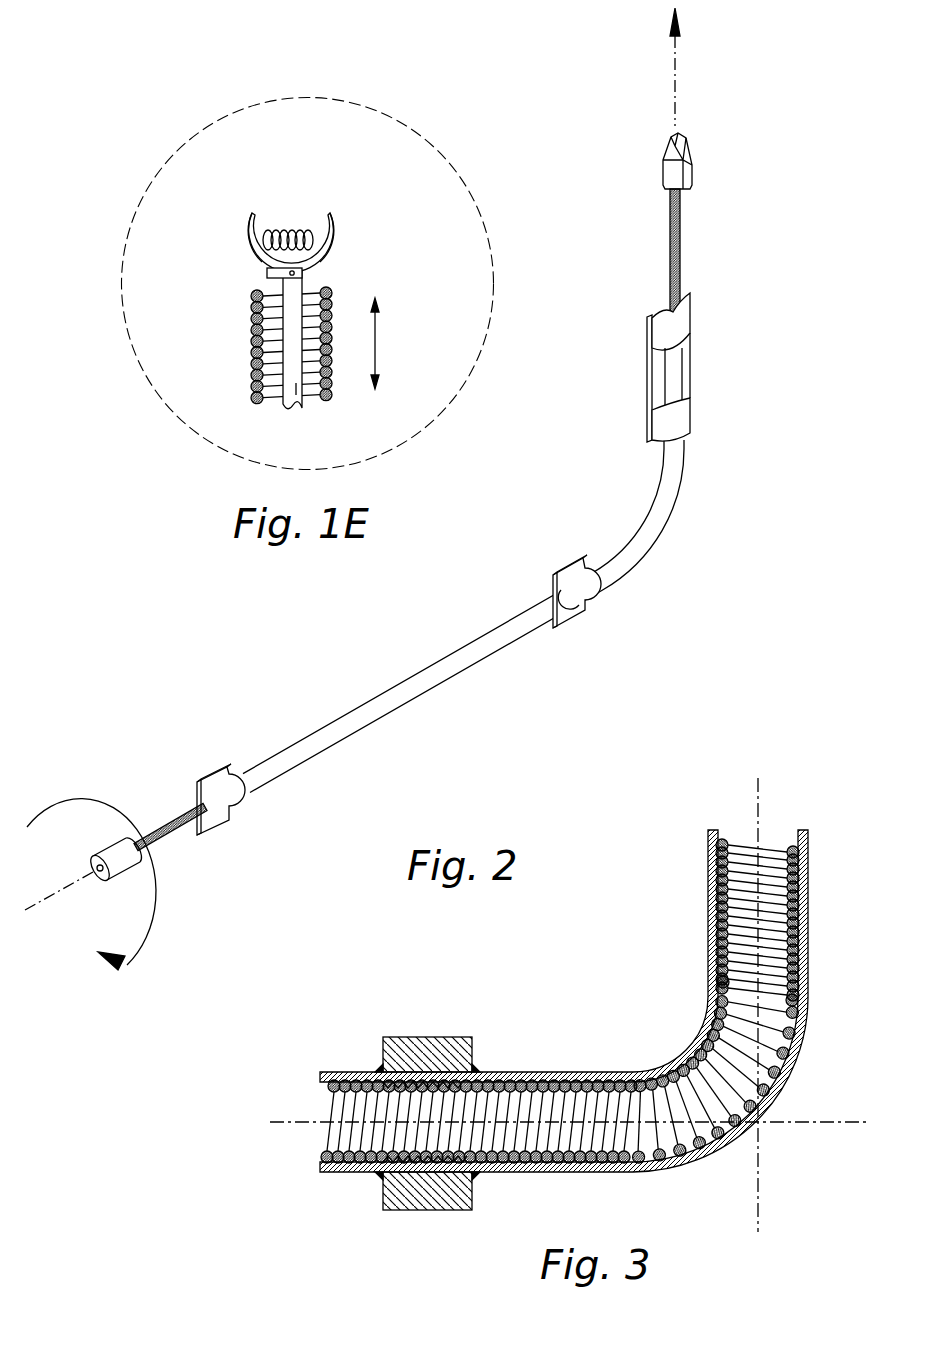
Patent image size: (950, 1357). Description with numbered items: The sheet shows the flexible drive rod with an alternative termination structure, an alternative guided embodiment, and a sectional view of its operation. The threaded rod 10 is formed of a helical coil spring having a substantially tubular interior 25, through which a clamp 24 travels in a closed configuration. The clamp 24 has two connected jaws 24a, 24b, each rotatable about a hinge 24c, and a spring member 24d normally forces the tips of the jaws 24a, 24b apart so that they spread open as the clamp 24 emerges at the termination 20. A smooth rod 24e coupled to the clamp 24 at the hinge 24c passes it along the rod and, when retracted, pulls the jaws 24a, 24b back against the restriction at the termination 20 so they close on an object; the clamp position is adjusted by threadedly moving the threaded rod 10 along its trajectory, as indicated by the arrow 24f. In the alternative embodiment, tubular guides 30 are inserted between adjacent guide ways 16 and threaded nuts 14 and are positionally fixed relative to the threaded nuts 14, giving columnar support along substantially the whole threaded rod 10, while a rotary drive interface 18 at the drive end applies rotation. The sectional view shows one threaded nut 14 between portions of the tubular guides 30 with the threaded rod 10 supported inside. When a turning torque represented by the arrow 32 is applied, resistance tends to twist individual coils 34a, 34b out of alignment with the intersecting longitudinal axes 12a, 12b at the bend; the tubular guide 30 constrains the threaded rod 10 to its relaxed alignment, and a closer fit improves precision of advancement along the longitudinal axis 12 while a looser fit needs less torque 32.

In FIG. 1E, the threaded rod 10 is at (250, 378).
In FIG. 3, the threaded rod 10 is at (332, 1142).
In FIG. 2, the longitudinal axis 12 is at (42, 903).
In FIG. 3, the longitudinal axis 12a is at (838, 1122).
In FIG. 3, the longitudinal axis 12b is at (758, 1172).
In FIG. 2, the threaded nut 14 is at (691, 426).
In FIG. 3, the threaded nut 14 is at (472, 1045).
In FIG. 2, the guide way 16 is at (691, 327).
In FIG. 2, the rotary drive interface 18 is at (120, 882).
In FIG. 2, the termination 20 is at (693, 163).
In FIG. 1E, the clamp 24 is at (274, 209).
In FIG. 1E, the jaw 24a is at (256, 260).
In FIG. 1E, the jaw 24b is at (331, 255).
In FIG. 1E, the hinge 24c is at (288, 274).
In FIG. 1E, the spring member 24d is at (296, 228).
In FIG. 1E, the smooth rod 24e is at (297, 383).
In FIG. 1E, the arrow 24f is at (378, 343).
In FIG. 1E, the tubular interior 25 is at (275, 412).
In FIG. 2, the tubular guide 30 is at (691, 376).
In FIG. 3, the tubular guide 30 is at (332, 1173).
In FIG. 2, the arrow 32 is at (173, 910).
In FIG. 3, the individual coil 34a is at (783, 990).
In FIG. 3, the individual coil 34b is at (782, 1010).